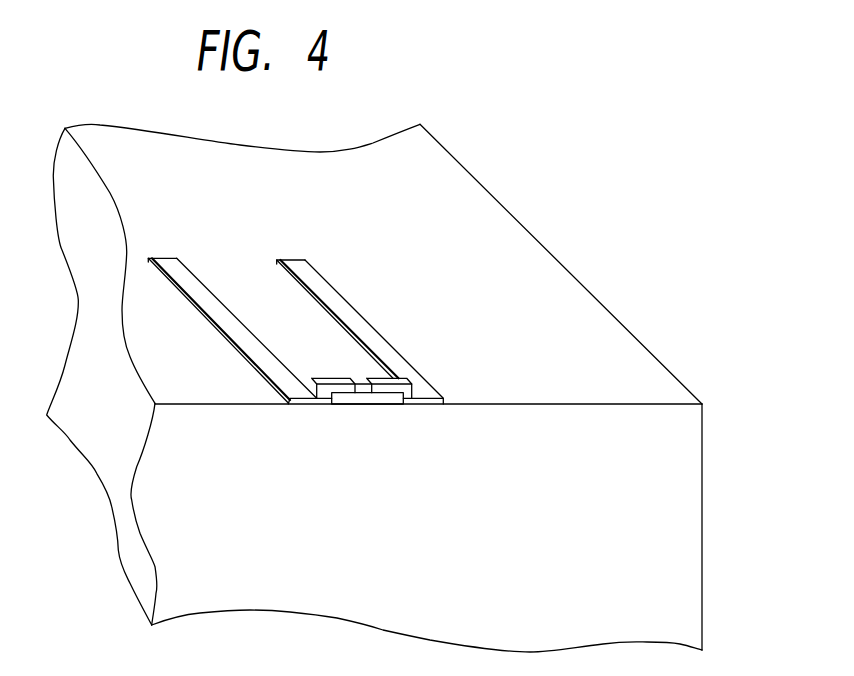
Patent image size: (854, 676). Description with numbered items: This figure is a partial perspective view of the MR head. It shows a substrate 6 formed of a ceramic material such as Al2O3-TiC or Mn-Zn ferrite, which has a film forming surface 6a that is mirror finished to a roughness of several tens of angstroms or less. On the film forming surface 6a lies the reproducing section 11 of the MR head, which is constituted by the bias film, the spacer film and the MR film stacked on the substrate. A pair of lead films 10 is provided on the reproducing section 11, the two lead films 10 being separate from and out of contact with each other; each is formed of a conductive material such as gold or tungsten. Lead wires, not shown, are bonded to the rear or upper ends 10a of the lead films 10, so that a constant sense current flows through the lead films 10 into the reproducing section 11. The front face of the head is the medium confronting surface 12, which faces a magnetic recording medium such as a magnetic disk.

The substrate 6 is at (604, 307).
The film forming surface 6a is at (467, 187).
The lead films 10 is at (190, 289).
The rear or upper ends of the lead films 10a is at (163, 261).
The reproducing section 11 is at (346, 399).
The medium confronting surface 12 is at (690, 498).